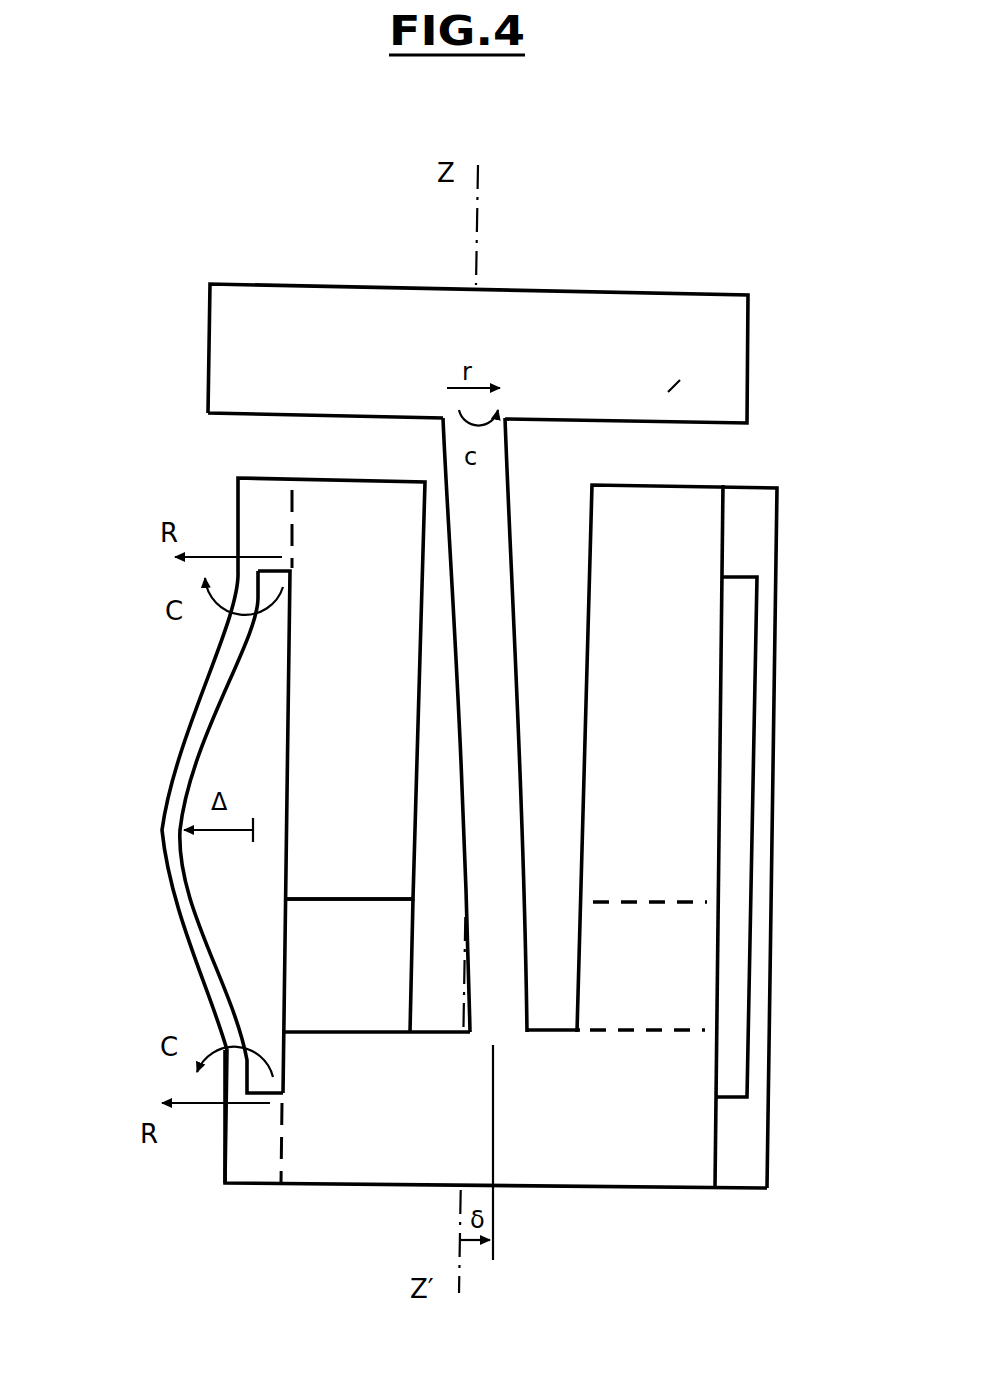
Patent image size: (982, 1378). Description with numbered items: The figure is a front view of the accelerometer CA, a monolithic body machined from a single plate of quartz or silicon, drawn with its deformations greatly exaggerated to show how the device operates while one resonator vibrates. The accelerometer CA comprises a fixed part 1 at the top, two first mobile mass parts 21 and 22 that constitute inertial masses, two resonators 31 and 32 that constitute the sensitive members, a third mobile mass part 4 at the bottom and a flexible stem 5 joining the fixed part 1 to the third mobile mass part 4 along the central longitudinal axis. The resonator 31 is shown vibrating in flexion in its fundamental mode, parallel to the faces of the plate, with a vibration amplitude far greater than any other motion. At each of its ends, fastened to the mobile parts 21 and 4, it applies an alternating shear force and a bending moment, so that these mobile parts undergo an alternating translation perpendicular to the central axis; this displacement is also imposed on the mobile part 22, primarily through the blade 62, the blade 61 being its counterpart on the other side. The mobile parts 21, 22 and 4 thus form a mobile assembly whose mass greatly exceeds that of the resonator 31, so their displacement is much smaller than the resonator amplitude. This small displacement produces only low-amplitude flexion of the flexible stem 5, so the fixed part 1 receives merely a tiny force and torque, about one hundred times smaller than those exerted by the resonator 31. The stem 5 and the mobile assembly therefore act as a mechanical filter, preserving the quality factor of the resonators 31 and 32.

The accelerometer CA is at (343, 230).
The fixed part 1 is at (725, 363).
The first mobile mass part 21 is at (352, 505).
The first mobile mass part 22 is at (657, 522).
The resonator 31 is at (187, 928).
The resonator 32 is at (765, 903).
The third mobile mass part 4 is at (568, 1165).
The flexible stem 5 is at (485, 600).
The blade 61 is at (327, 998).
The blade 62 is at (610, 1000).